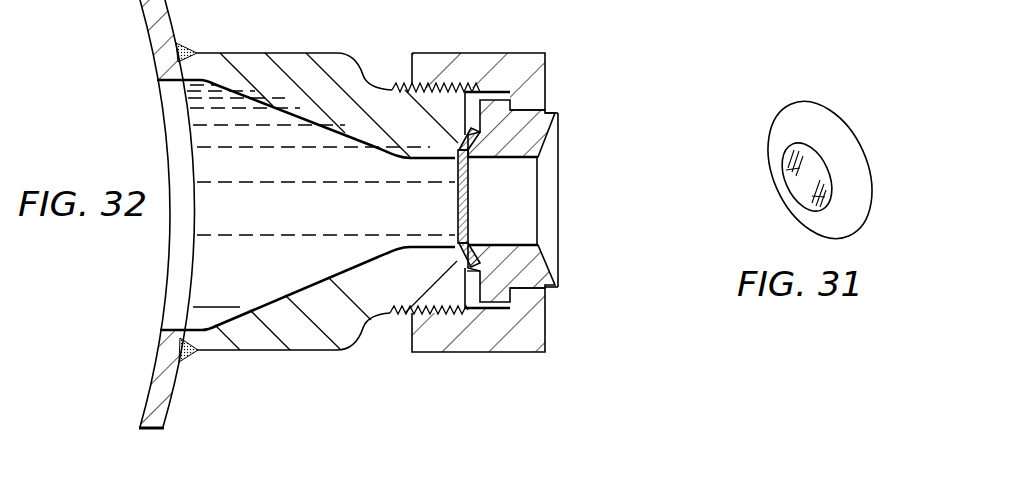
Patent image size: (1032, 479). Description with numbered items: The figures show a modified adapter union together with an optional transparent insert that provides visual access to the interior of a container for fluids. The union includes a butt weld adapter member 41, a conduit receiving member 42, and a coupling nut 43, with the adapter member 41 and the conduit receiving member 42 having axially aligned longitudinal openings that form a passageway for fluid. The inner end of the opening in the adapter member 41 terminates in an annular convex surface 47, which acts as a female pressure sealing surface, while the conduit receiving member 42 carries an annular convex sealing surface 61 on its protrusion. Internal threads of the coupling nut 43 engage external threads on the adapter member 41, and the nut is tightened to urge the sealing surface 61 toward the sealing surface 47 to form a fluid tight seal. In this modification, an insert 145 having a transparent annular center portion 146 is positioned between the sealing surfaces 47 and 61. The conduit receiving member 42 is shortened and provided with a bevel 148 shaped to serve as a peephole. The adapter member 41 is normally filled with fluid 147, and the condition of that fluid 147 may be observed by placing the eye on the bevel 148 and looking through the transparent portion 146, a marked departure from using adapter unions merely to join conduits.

In FIG. 32, the butt weld adapter member 41 is at (277, 53).
In FIG. 32, the conduit receiving member 42 is at (553, 113).
In FIG. 32, the coupling nut 43 is at (497, 52).
In FIG. 32, the annular convex surface 47 is at (460, 150).
In FIG. 32, the annular convex sealing surface 61 is at (461, 140).
In FIG. 32, the insert 145 is at (468, 243).
In FIG. 31, the insert 145 is at (847, 160).
In FIG. 32, the transparent annular center portion 146 is at (468, 198).
In FIG. 31, the transparent annular center portion 146 is at (797, 177).
In FIG. 32, the fluid 147 is at (316, 206).
In FIG. 32, the bevel 148 is at (553, 253).